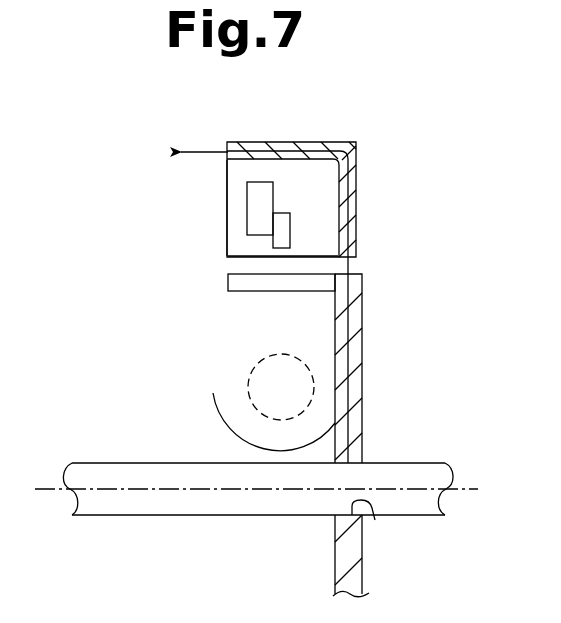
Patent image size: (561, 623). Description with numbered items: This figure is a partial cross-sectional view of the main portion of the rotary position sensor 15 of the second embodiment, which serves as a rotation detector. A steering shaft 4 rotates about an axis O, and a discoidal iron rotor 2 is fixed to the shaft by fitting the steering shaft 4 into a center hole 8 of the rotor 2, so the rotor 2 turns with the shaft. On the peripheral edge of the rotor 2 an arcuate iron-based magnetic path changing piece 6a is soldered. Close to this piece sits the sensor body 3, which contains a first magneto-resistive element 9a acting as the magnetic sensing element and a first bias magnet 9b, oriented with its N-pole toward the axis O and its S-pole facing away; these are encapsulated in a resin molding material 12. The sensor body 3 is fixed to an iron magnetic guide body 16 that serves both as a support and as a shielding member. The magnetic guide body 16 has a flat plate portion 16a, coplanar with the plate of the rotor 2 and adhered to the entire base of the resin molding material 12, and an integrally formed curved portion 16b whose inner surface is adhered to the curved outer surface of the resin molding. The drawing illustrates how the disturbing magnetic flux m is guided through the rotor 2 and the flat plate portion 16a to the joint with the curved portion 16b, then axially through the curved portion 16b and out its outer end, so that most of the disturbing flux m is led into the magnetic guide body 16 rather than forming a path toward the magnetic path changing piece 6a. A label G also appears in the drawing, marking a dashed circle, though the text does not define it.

The rotor 2 is at (355, 365).
The sensor body 3 is at (232, 187).
The steering shaft 4 is at (417, 475).
The magnetic path changing piece 6a is at (228, 283).
The center hole 8 is at (375, 520).
The first magneto-resistive element 9a is at (282, 248).
The first bias magnet 9b is at (248, 212).
The resin molding material 12 is at (233, 205).
The rotary position sensor 15 is at (467, 197).
The magnetic guide body 16 is at (357, 247).
The flat plate portion 16a is at (352, 216).
The curved portion 16b is at (307, 142).
The center of gravity G is at (250, 374).
The disturbing magnetic flux m is at (222, 427).
The axis O is at (48, 489).